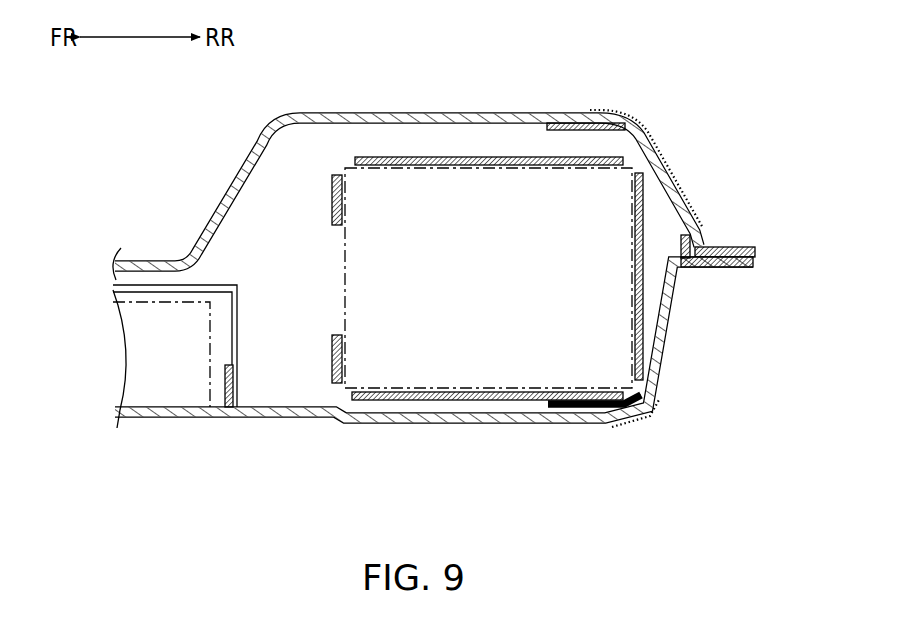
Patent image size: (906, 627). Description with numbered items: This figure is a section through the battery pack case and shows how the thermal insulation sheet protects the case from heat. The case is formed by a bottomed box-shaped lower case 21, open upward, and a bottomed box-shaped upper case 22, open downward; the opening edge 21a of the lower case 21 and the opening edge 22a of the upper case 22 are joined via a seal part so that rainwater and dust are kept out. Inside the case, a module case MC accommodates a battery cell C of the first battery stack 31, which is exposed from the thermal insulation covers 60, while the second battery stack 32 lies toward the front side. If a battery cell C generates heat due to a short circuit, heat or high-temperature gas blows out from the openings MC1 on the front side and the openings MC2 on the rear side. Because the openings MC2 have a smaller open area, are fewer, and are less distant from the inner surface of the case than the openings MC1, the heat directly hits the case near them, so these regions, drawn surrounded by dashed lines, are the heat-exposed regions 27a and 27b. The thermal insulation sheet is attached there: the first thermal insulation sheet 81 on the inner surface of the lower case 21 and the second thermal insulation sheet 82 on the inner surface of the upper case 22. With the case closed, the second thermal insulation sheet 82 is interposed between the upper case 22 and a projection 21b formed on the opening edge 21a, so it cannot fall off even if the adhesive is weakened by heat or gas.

The lower case 21 is at (453, 425).
The opening edge of the lower case 21a is at (740, 270).
The projection 21b is at (683, 262).
The upper case 22 is at (334, 112).
The opening edge of the upper case 22a is at (740, 247).
The heat-exposed region 27a is at (667, 128).
The heat-exposed region 27b is at (629, 425).
The first battery stack 31 is at (528, 155).
The second battery stack 32 is at (150, 300).
The thermal insulation cover 60 is at (237, 383).
The first thermal insulation sheet 81 is at (600, 420).
The second thermal insulation sheet 82 is at (594, 124).
The module case MC is at (487, 214).
The openings MC1 is at (330, 395).
The openings MC2 is at (648, 170).
The battery cell C is at (494, 160).